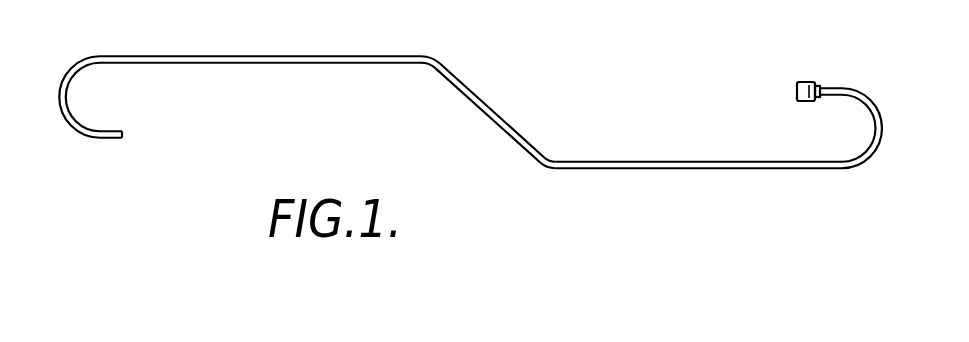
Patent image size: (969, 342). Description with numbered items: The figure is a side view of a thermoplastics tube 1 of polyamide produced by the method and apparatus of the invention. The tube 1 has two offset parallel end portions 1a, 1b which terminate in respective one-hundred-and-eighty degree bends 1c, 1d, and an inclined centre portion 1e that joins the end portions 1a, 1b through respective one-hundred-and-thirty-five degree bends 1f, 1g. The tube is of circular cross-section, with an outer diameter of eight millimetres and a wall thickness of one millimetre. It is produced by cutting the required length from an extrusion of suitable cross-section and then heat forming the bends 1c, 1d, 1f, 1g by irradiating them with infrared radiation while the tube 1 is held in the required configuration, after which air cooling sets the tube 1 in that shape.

The thermoplastics tube 1 is at (250, 50).
The end portion 1a is at (225, 66).
The end portion 1b is at (702, 143).
The 180° bend 1c is at (60, 112).
The 180° bend 1d is at (879, 140).
The inclined centre portion 1e is at (502, 121).
The 135° bend 1f is at (441, 61).
The 135° bend 1g is at (537, 167).